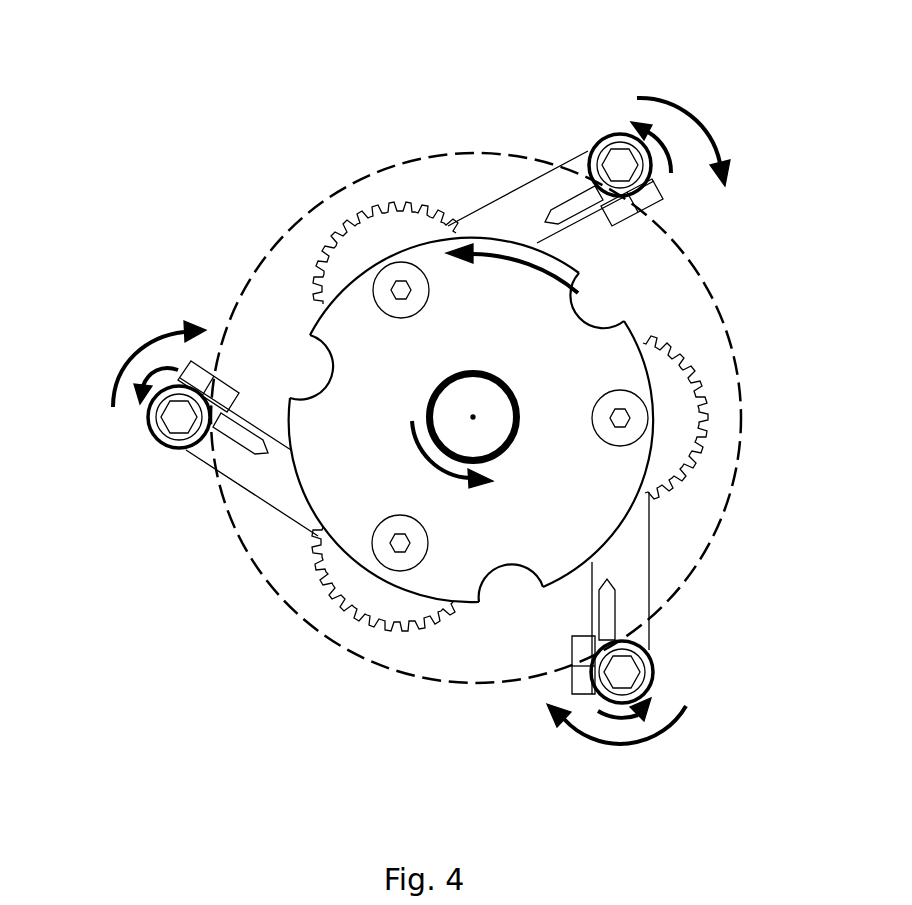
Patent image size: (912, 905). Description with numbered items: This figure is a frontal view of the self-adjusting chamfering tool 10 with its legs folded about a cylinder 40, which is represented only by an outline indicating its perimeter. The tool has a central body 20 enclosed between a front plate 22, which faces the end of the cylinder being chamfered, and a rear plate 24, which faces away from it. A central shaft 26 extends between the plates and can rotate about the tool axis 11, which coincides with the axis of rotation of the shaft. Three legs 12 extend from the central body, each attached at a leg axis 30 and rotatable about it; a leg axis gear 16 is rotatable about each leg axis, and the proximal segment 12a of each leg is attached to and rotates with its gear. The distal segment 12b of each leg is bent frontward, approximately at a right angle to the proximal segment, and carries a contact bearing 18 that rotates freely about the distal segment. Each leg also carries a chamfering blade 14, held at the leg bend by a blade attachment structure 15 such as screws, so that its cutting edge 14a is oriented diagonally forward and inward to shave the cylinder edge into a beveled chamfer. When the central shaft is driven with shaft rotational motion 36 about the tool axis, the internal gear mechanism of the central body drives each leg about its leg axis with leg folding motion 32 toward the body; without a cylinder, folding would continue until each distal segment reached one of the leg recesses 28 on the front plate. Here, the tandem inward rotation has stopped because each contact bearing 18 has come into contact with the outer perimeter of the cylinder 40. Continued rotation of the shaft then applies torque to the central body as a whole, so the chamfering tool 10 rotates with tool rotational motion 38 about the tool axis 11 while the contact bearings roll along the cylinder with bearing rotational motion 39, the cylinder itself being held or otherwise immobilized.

The chamfering tool 10 is at (196, 94).
The tool axis 11 is at (473, 417).
The leg 12 is at (497, 179).
The proximal segment 12a is at (268, 510).
The distal segment 12b is at (218, 432).
The chamfering blade 14 is at (577, 207).
The cutting edge 14a is at (573, 215).
The blade attachment structure 15 is at (652, 192).
The leg axis gear 16 is at (368, 215).
The contact bearing 18 is at (606, 138).
The central body 20 is at (265, 265).
The front plate 22 is at (630, 520).
The rear plate 24 is at (292, 345).
The central shaft 26 is at (507, 445).
The leg recess 28 is at (505, 566).
The leg axis 30 is at (400, 541).
The leg folding motion 32 is at (710, 128).
The shaft rotational motion 36 is at (438, 487).
The tool rotational motion 38 is at (516, 258).
The bearing rotational motion 39 is at (672, 145).
The cylinder 40 is at (718, 312).